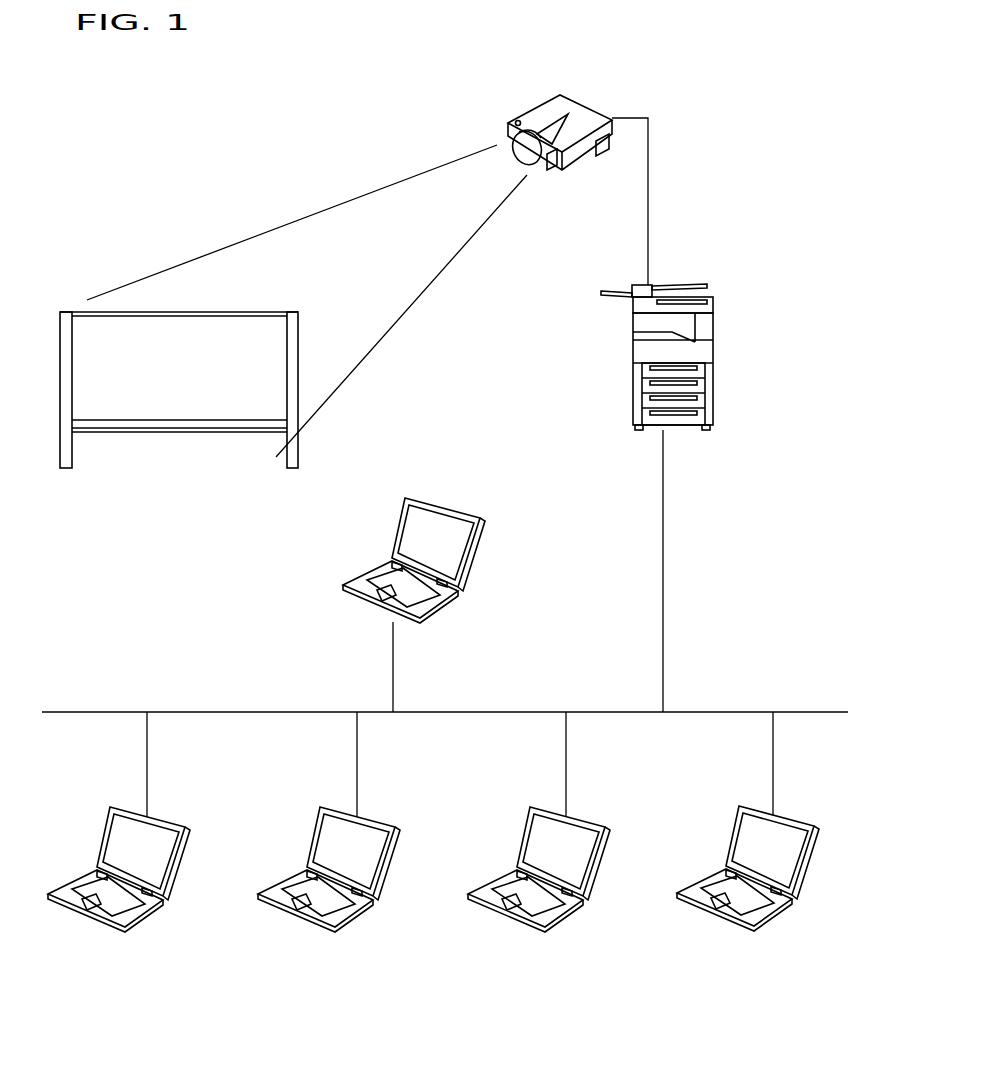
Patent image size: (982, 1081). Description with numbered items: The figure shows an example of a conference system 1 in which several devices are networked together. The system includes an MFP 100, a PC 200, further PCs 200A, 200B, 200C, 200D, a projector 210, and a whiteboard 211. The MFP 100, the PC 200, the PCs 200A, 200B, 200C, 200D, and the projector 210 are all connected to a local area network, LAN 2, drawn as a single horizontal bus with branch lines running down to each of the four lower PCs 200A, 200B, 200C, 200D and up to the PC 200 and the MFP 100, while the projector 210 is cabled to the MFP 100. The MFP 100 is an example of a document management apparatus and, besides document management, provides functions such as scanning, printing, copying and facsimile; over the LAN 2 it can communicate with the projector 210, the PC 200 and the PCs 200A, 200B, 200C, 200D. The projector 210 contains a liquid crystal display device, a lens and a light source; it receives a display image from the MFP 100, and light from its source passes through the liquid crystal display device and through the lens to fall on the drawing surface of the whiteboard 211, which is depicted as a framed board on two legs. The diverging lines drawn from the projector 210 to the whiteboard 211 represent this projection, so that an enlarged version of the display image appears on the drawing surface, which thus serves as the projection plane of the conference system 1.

The conference system 1 is at (315, 122).
The local area network (LAN) 2 is at (728, 712).
The MFP 100 is at (713, 348).
The PC 200 is at (450, 507).
The PC 200A is at (790, 813).
The PC 200B is at (585, 817).
The PC 200C is at (375, 817).
The PC 200D is at (165, 815).
The projector 210 is at (580, 102).
The whiteboard 211 is at (167, 432).